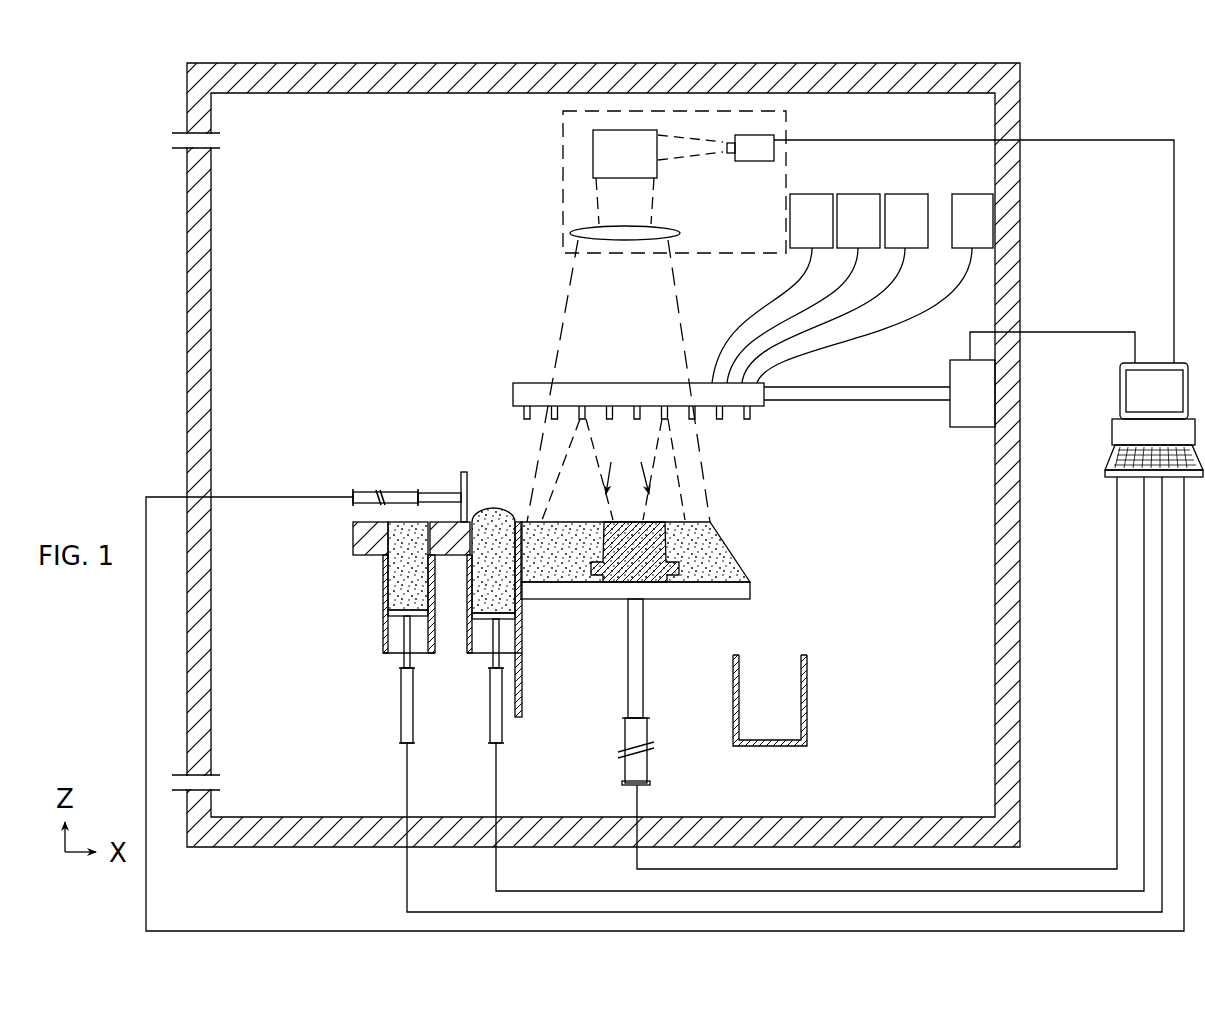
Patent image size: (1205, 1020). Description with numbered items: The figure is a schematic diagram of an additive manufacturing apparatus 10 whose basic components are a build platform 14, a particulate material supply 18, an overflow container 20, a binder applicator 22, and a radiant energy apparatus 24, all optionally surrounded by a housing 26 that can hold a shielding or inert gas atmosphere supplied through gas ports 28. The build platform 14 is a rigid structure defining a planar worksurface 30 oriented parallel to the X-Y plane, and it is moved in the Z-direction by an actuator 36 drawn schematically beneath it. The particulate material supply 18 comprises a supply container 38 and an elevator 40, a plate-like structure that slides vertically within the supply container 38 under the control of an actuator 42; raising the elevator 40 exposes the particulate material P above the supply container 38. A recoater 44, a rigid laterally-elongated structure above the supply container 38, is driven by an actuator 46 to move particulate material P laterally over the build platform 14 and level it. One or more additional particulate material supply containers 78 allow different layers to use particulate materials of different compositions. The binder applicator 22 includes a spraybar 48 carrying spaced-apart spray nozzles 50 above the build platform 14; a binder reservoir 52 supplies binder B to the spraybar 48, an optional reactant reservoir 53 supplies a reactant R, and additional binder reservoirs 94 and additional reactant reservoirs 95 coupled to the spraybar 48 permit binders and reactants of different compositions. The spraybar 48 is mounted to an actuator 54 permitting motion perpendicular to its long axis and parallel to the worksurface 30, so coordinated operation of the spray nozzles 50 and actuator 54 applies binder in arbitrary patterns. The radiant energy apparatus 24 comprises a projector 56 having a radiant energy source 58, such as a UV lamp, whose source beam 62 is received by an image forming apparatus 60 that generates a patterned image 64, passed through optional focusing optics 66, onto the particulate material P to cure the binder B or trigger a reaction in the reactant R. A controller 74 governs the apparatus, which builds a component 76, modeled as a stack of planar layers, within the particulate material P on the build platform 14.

The apparatus 10 is at (596, 429).
The build platform 14 is at (739, 591).
The particulate material supply 18 is at (423, 600).
The overflow container 20 is at (768, 746).
The binder applicator 22 is at (881, 428).
The radiant energy apparatus 24 is at (812, 237).
The housing 26 is at (325, 92).
The gas ports 28 is at (214, 148).
The worksurface 30 is at (637, 571).
The actuator 36 is at (642, 767).
The supply container 38 is at (500, 614).
The elevator 40 is at (508, 617).
The actuator 42 is at (499, 728).
The recoater 44 is at (462, 475).
The actuator 46 is at (388, 490).
The spraybar 48 is at (709, 431).
The spray nozzles 50 is at (751, 421).
The binder reservoir 52 is at (798, 235).
The reactant reservoir 53 is at (844, 235).
The actuator 54 is at (958, 411).
The projector 56 is at (827, 237).
The radiant energy source 58 is at (757, 162).
The image forming apparatus 60 is at (611, 172).
The source beam 62 is at (673, 158).
The patterned image 64 is at (676, 298).
The focusing optics 66 is at (662, 229).
The controller 74 is at (1141, 410).
The component 76 is at (650, 583).
The additional particulate material supply container 78 is at (385, 632).
The additional binder reservoir 94 is at (892, 235).
The additional reactant reservoir 95 is at (958, 235).
The particulate material P is at (489, 511).
The binder B is at (612, 465).
The reactant R is at (641, 465).